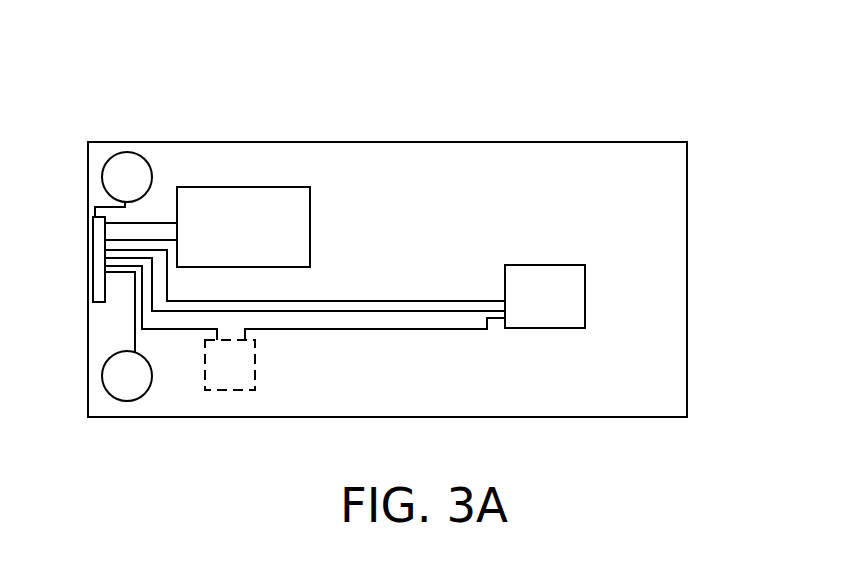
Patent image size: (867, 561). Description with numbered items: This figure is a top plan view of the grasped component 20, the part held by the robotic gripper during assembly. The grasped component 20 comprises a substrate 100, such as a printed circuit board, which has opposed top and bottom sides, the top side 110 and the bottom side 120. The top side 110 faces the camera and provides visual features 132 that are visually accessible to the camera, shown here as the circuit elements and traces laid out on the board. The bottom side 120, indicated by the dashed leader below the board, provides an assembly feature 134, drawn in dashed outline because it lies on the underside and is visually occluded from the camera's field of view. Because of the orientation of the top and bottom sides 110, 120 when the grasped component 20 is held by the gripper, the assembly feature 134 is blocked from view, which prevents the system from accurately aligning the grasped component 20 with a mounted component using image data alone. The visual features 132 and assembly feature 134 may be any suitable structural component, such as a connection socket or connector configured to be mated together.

The grasped component 20 is at (423, 269).
The substrate 100 is at (385, 269).
The top side 110 is at (585, 177).
The bottom side 120 is at (578, 418).
The visual features 132 is at (535, 275).
The assembly feature 134 is at (230, 373).